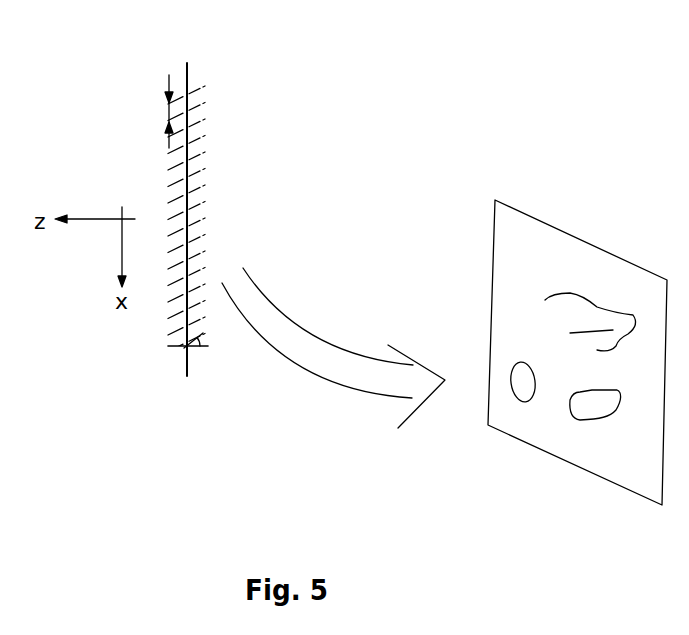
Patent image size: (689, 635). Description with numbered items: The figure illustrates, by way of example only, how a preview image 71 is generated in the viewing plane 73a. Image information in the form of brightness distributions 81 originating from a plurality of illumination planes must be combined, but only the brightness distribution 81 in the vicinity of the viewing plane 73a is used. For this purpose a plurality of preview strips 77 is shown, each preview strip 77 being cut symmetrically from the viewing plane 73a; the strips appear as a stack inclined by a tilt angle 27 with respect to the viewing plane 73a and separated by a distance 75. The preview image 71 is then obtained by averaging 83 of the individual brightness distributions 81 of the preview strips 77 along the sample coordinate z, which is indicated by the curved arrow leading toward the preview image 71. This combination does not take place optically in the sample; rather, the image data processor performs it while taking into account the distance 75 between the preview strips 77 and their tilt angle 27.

The tilt angle 27 is at (191, 344).
The preview image 71 is at (578, 472).
The viewing plane 73a is at (187, 368).
The distance 75 is at (168, 112).
The preview strips 77 is at (238, 219).
The brightness distribution 81 is at (232, 100).
The averaging 83 is at (283, 275).